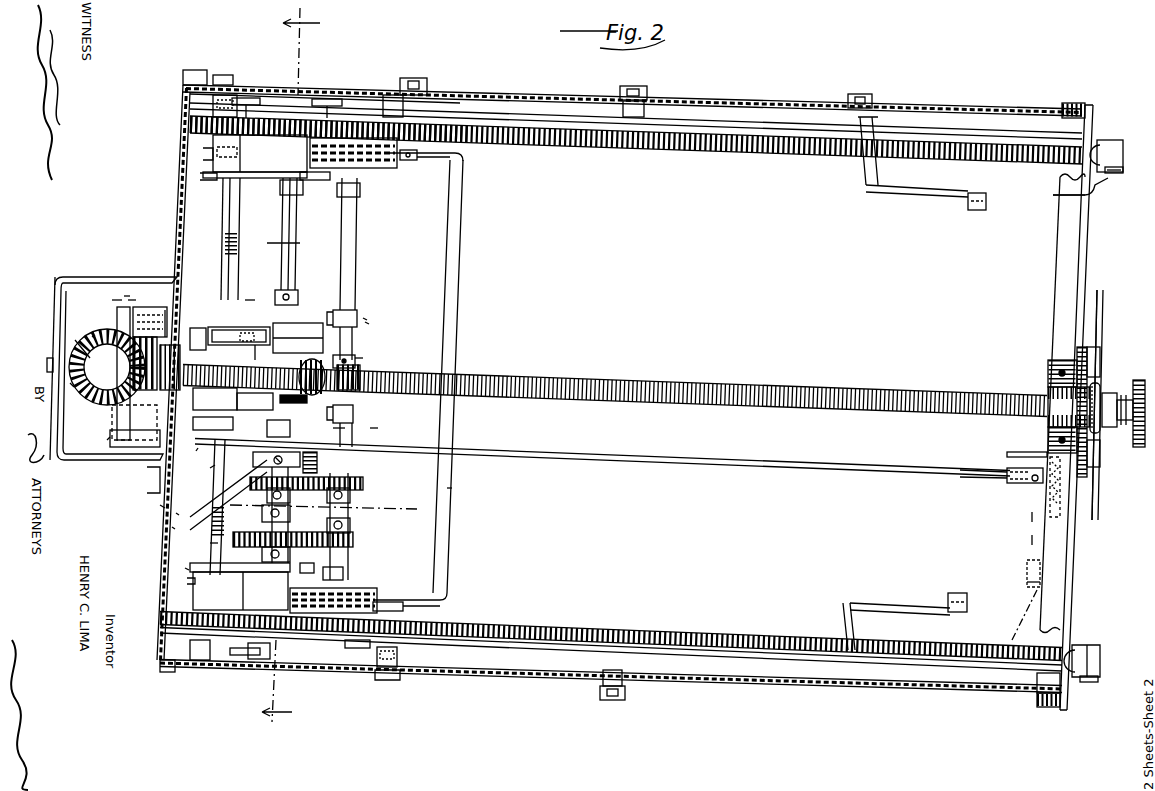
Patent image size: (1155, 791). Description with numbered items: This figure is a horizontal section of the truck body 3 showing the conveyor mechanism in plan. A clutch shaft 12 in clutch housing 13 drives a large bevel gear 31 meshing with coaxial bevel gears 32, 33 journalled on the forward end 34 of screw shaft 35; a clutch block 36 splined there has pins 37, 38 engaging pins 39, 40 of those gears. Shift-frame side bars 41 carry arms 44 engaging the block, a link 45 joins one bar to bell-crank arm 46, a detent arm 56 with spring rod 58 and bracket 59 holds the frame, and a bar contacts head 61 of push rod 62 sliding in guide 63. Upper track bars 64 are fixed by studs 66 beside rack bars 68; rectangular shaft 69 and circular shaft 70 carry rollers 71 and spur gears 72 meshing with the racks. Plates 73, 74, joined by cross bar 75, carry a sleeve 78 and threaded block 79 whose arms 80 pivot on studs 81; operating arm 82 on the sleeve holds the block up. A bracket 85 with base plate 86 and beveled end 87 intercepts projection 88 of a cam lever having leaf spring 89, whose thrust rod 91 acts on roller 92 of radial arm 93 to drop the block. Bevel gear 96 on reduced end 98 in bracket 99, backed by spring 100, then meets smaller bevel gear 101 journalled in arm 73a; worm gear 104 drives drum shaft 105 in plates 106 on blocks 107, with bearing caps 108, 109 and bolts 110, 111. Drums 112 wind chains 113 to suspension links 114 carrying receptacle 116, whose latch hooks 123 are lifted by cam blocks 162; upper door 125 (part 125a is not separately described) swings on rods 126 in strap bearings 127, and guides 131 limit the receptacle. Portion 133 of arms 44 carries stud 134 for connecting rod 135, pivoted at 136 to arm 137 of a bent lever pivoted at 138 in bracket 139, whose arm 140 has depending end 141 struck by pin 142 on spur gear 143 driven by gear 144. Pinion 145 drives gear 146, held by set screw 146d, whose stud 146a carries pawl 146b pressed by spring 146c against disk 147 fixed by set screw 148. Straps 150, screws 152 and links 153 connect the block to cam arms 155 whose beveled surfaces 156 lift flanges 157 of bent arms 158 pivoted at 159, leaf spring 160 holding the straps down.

The truck body 3 is at (703, 684).
The clutch shaft 12 is at (330, 510).
The clutch housing 13 is at (287, 371).
The large bevel gear 31 is at (93, 397).
The bevel gear 32 is at (167, 387).
The bevel gear 33 is at (77, 343).
The forward end of screw shaft 34 is at (47, 368).
The screw shaft 35 is at (682, 384).
The clutch block 36 is at (117, 340).
The clutch pin 37 is at (112, 402).
The clutch pin 38 is at (72, 388).
The clutch pin 39 is at (200, 338).
The clutch pin 40 is at (93, 357).
The side bars 41 is at (128, 297).
The inwardly presented arms 44 is at (110, 283).
The connecting link 45 is at (148, 466).
The bell crank arm 46 is at (198, 446).
The detent arm 56 is at (117, 298).
The spring rod 58 is at (160, 308).
The fixed bracket 59 is at (239, 325).
The enlarged head 61 is at (133, 298).
The push rod 62 is at (250, 300).
The guide 63 is at (170, 318).
The upper track bars 64 is at (740, 118).
The screws or studs 66 is at (415, 78).
The rack bar 68 is at (648, 150).
The shaft of rectangular cross-section 69 is at (230, 195).
The shaft of circular cross-section 70 is at (292, 215).
The carriage-supporting rollers 71 is at (258, 98).
The spur gears 72 is at (325, 122).
The side plate 73 is at (357, 312).
The inwardly-presented arm 73a is at (362, 320).
The side plate 74 is at (347, 432).
The cross bar 75 is at (298, 331).
The sleeve 78 is at (350, 342).
The threaded block 79 is at (350, 355).
The arms 80 is at (215, 409).
The studs 81 is at (200, 478).
The operating arm 82 is at (338, 397).
The fixed bracket 85 is at (1025, 452).
The base plate 86 is at (1063, 490).
The beveled forward end 87 is at (1006, 455).
The radial projection 88 is at (255, 470).
The leaf spring 89 is at (255, 406).
The thrust rod 91 is at (163, 503).
The roller 92 is at (293, 407).
The radial arm 93 is at (290, 434).
The bevel gear 96 is at (1097, 383).
The reduced end 98 is at (1140, 378).
The fixed bracket 99 is at (1140, 437).
The spring 100 is at (1118, 420).
The smaller bevel gear 101 is at (372, 356).
The worm gear 104 is at (390, 388).
The cross shaft 105 is at (350, 243).
The rearwardly-presented plates 106 is at (370, 170).
The supporting blocks 107 is at (250, 372).
The bearing cap 108 is at (368, 322).
The bearing cap 109 is at (378, 428).
The bolts 110 is at (366, 320).
The bolts 111 is at (357, 410).
The chain-winding drums 112 is at (320, 180).
The chains 113 is at (410, 158).
The suspension links 114 is at (455, 160).
The trough-like receptacle 116 is at (452, 248).
The hook 123 is at (430, 137).
The upper door 125 is at (1090, 270).
The bar arm 125a is at (1053, 195).
The transverse rods 126 is at (1100, 330).
The strap bearings 127 is at (1110, 160).
The guides or tracks 131 is at (1115, 173).
The laterally-presented portion 133 is at (110, 437).
The stud 134 is at (127, 473).
The connecting rod 135 is at (668, 468).
The pivot 136 is at (1030, 484).
The lever arm 137 is at (1032, 517).
The pivot 138 is at (1032, 540).
The fixed bracket 139 is at (1025, 560).
The lever arm 140 is at (1027, 582).
The depending end 141 is at (1011, 615).
The pin 142 is at (343, 552).
The spur gear 143 is at (212, 543).
The smaller spur gear 144 is at (355, 540).
The spur pinion 145 is at (365, 485).
The gear 146 is at (187, 570).
The stud 146a is at (300, 458).
The pawl 146b is at (452, 488).
The spring 146c is at (318, 462).
The set screw 146d is at (308, 516).
The disk 147 is at (173, 527).
The set screw 148 is at (178, 515).
The straps or bars 150 is at (267, 243).
The screw 152 is at (150, 613).
The link 153 is at (243, 200).
The cam arm 155 is at (207, 152).
The beveled outer surface 156 is at (200, 176).
The inwardly-presented flange 157 is at (978, 212).
The bent lever arm 158 is at (930, 180).
The pivot 159 is at (866, 150).
The leaf spring 160 is at (298, 298).
The cam blocks 162 is at (403, 163).